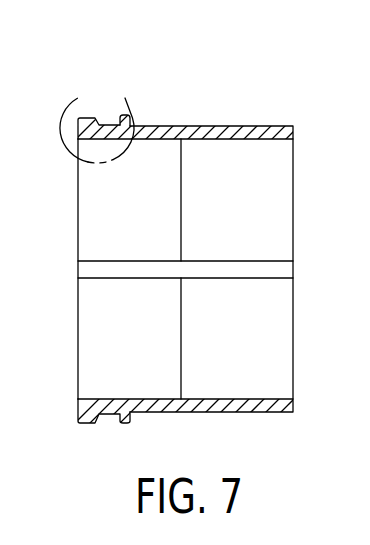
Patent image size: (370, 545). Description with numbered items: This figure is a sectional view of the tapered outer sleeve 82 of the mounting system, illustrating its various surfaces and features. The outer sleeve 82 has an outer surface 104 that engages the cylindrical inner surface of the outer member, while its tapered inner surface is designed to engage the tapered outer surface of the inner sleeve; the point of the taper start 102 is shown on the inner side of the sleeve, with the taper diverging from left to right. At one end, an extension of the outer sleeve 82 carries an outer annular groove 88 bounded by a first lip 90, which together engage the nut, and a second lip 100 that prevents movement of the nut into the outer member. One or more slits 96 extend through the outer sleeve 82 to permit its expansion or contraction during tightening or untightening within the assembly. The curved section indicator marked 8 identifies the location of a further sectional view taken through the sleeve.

The tapered outer sleeve 82 is at (276, 72).
The outer annular groove 88 is at (108, 118).
The first lip 90 is at (82, 129).
The slit 96 is at (249, 268).
The second lip 100 is at (132, 124).
The taper start 102 is at (181, 158).
The outer surface 104 is at (238, 127).
The section line 8- 8 is at (99, 118).